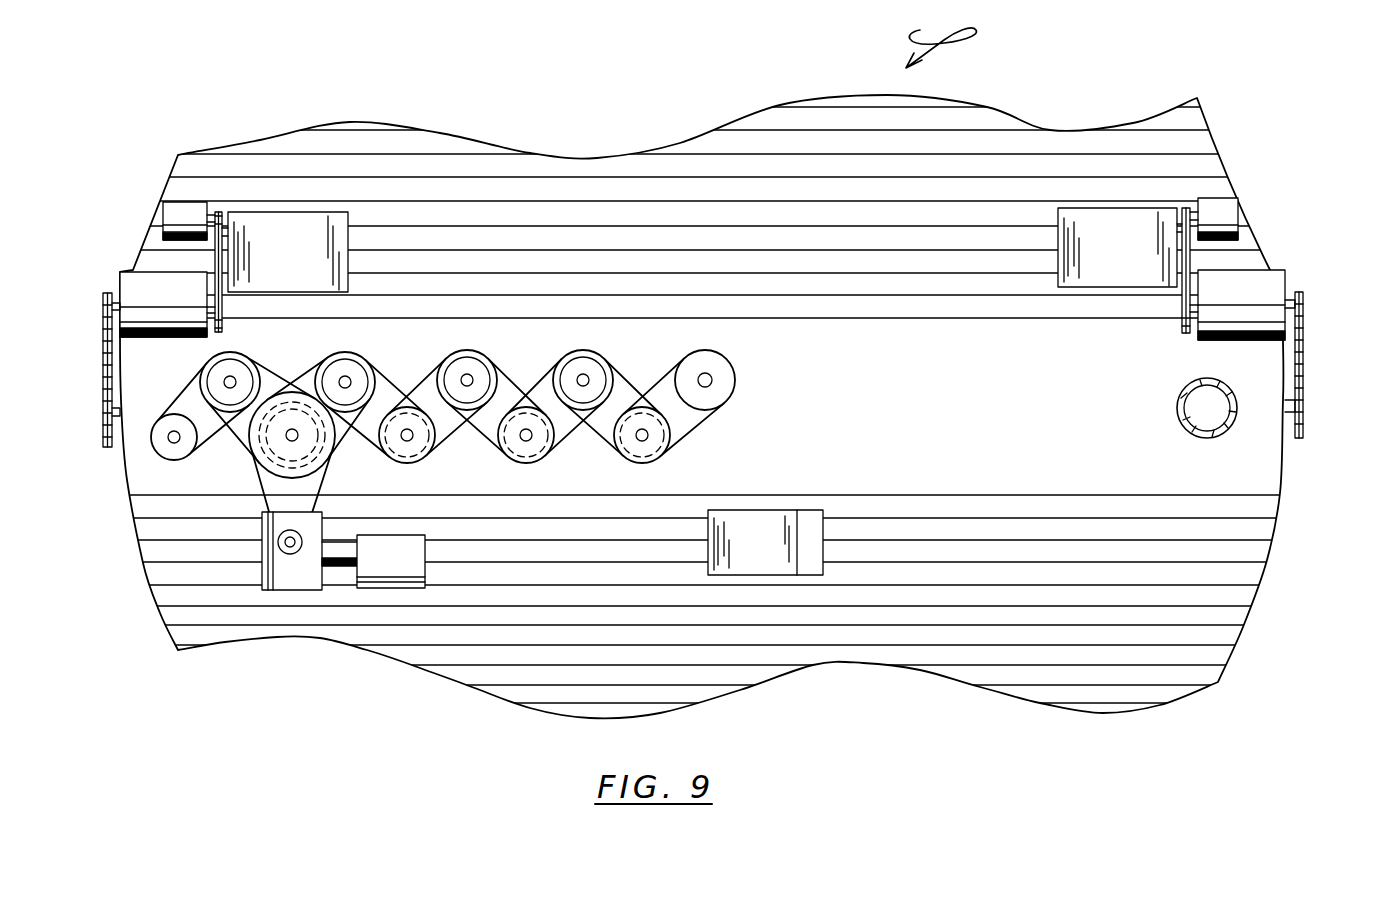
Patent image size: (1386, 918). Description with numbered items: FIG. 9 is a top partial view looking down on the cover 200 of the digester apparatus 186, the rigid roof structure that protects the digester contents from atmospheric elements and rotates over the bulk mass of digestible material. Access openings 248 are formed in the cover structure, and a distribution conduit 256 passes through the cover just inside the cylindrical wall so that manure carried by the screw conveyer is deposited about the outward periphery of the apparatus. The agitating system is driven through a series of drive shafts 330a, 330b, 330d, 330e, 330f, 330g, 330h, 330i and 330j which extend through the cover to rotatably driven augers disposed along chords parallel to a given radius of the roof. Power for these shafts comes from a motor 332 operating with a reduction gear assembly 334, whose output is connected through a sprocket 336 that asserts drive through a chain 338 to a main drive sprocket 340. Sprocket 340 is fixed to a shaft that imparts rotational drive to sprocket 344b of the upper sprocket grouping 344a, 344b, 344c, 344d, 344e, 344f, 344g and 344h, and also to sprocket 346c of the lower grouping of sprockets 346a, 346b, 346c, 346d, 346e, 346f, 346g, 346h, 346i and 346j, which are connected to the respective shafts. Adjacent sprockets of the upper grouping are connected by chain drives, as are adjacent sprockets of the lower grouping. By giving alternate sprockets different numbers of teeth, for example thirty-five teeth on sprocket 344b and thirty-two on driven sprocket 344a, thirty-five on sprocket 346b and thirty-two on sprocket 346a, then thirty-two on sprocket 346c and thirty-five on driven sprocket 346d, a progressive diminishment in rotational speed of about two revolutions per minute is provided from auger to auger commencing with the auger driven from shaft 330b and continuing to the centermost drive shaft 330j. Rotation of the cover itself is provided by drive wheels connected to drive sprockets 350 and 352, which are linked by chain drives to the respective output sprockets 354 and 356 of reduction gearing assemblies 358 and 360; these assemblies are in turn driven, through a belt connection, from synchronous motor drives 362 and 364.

The digester apparatus 186 is at (941, 44).
The cover 200 is at (523, 165).
The access openings 248 is at (297, 254).
The distribution conduit 256 is at (1177, 408).
The drive shaft 330a is at (168, 449).
The drive shaft 330b is at (208, 367).
The drive shaft 330d is at (344, 372).
The drive shaft 330e is at (403, 452).
The drive shaft 330f is at (464, 370).
The drive shaft 330g is at (522, 452).
The drive shaft 330h is at (581, 370).
The drive shaft 330i is at (638, 452).
The drive shaft 330j is at (706, 372).
The motor 332 is at (408, 556).
The reduction gear assembly 334 is at (296, 580).
The sprocket 336 is at (278, 543).
The chain 338 is at (266, 502).
The main drive sprocket 340 is at (266, 468).
The sprocket 344a is at (247, 362).
The sprocket 344b is at (325, 457).
The sprocket 344c is at (362, 362).
The sprocket 344d is at (422, 457).
The sprocket 344e is at (484, 362).
The sprocket 344f is at (536, 457).
The sprocket 344g is at (601, 362).
The sprocket 344h is at (664, 457).
The sprocket 346a is at (180, 428).
The sprocket 346b is at (232, 374).
The sprocket 346c is at (332, 462).
The sprocket 346d is at (347, 374).
The sprocket 346e is at (420, 462).
The sprocket 346f is at (466, 372).
The sprocket 346g is at (534, 462).
The sprocket 346h is at (584, 372).
The sprocket 346i is at (652, 462).
The sprocket 346j is at (711, 372).
The drive sprocket 350 is at (103, 305).
The drive sprocket 352 is at (1305, 418).
The output sprocket 354 is at (103, 435).
The output sprocket 356 is at (1305, 312).
The reduction gearing assembly 358 is at (135, 288).
The reduction gearing assembly 360 is at (1265, 278).
The synchronous motor drive 362 is at (175, 210).
The synchronous motor drive 364 is at (1228, 210).